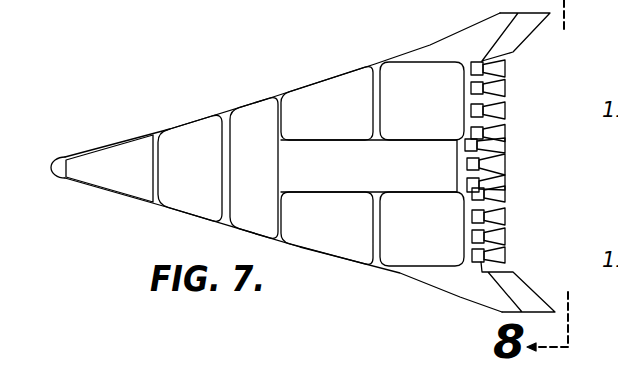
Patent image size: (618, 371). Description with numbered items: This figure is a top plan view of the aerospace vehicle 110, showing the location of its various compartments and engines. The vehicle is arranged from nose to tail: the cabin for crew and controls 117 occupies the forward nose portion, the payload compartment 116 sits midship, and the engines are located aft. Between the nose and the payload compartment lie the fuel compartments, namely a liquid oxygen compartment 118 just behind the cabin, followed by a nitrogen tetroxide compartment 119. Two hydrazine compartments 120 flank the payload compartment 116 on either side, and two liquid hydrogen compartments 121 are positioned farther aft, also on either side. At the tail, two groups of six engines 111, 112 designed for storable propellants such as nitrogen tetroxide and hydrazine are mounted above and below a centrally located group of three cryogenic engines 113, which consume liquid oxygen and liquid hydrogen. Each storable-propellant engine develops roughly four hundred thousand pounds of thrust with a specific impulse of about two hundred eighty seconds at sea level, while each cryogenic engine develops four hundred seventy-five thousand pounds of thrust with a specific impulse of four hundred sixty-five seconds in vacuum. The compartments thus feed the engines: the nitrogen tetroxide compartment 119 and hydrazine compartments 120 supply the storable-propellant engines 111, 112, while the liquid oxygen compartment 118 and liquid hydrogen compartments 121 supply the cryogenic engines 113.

The aerospace vehicle 110 is at (278, 97).
The storable-propellant engines 111 is at (507, 85).
The storable-propellant engines 112 is at (507, 232).
The cryogenic engines 113 is at (507, 185).
The payload compartment 116 is at (393, 157).
The cabin for crew and controls 117 is at (107, 160).
The liquid oxygen compartment 118 is at (187, 133).
The nitrogen tetroxide compartment 119 is at (250, 117).
The hydrazine compartments 120 is at (320, 97).
The liquid hydrogen compartments 121 is at (405, 72).